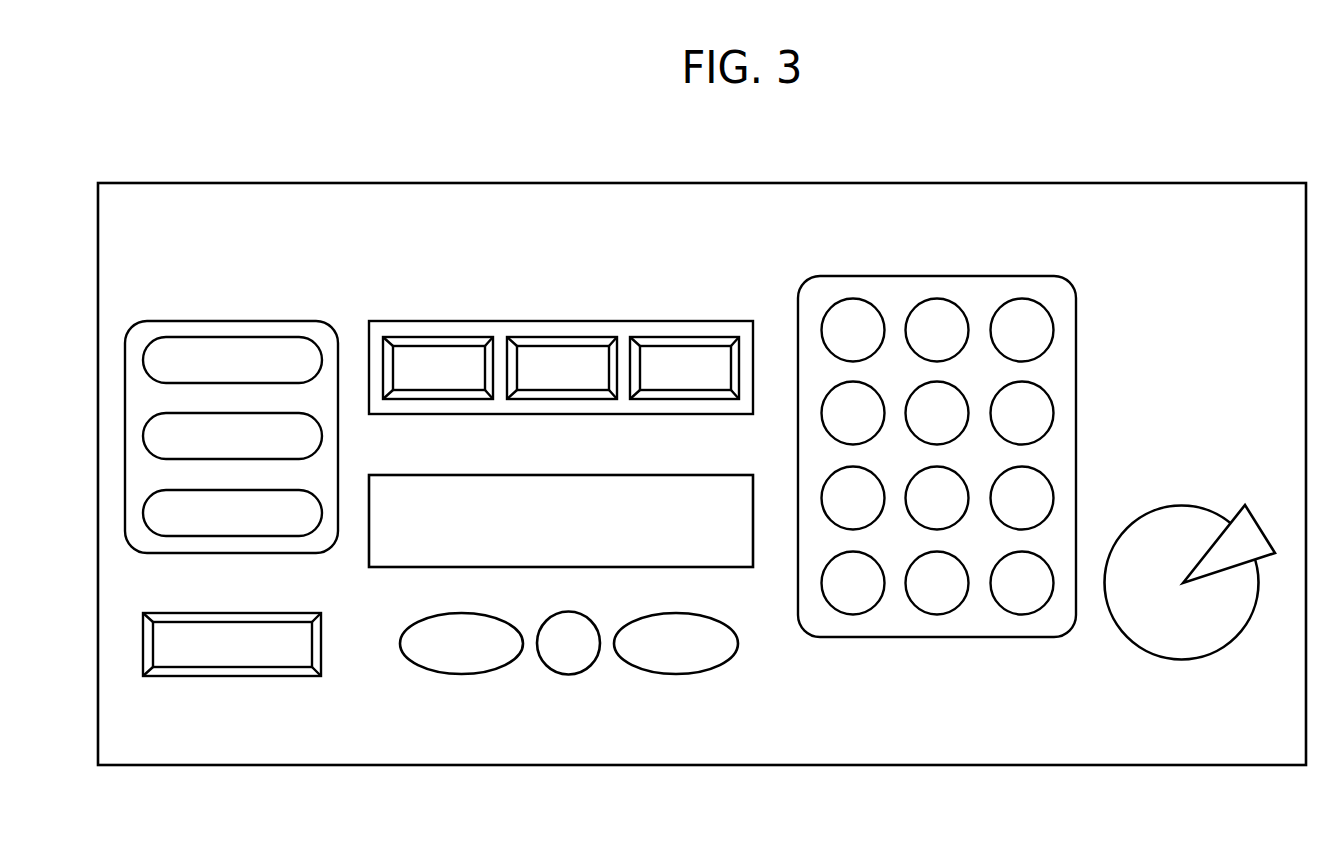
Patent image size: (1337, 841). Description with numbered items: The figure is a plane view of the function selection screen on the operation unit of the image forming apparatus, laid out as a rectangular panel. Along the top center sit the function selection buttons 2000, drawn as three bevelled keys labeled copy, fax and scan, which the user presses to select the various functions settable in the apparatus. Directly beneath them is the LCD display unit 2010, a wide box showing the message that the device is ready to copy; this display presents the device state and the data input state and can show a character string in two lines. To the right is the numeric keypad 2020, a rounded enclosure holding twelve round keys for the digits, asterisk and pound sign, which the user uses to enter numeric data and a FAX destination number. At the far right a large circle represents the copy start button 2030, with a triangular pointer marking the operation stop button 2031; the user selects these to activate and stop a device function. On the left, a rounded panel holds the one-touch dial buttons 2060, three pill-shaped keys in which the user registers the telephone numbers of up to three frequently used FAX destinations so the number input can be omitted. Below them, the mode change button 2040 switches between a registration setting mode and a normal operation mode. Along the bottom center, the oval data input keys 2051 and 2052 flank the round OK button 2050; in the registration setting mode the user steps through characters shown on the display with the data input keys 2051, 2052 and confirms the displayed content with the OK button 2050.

The function selection buttons 2000 is at (572, 321).
The LCD display unit 2010 is at (686, 484).
The numeric keypad 2020 is at (951, 276).
The copy start button 2030 is at (1183, 655).
The operation stop button 2031 is at (1253, 490).
The mode change button 2040 is at (235, 677).
The OK button 2050 is at (569, 675).
The data input key 2051 is at (462, 675).
The data input key 2052 is at (677, 675).
The one-touch dial buttons 2060 is at (231, 321).